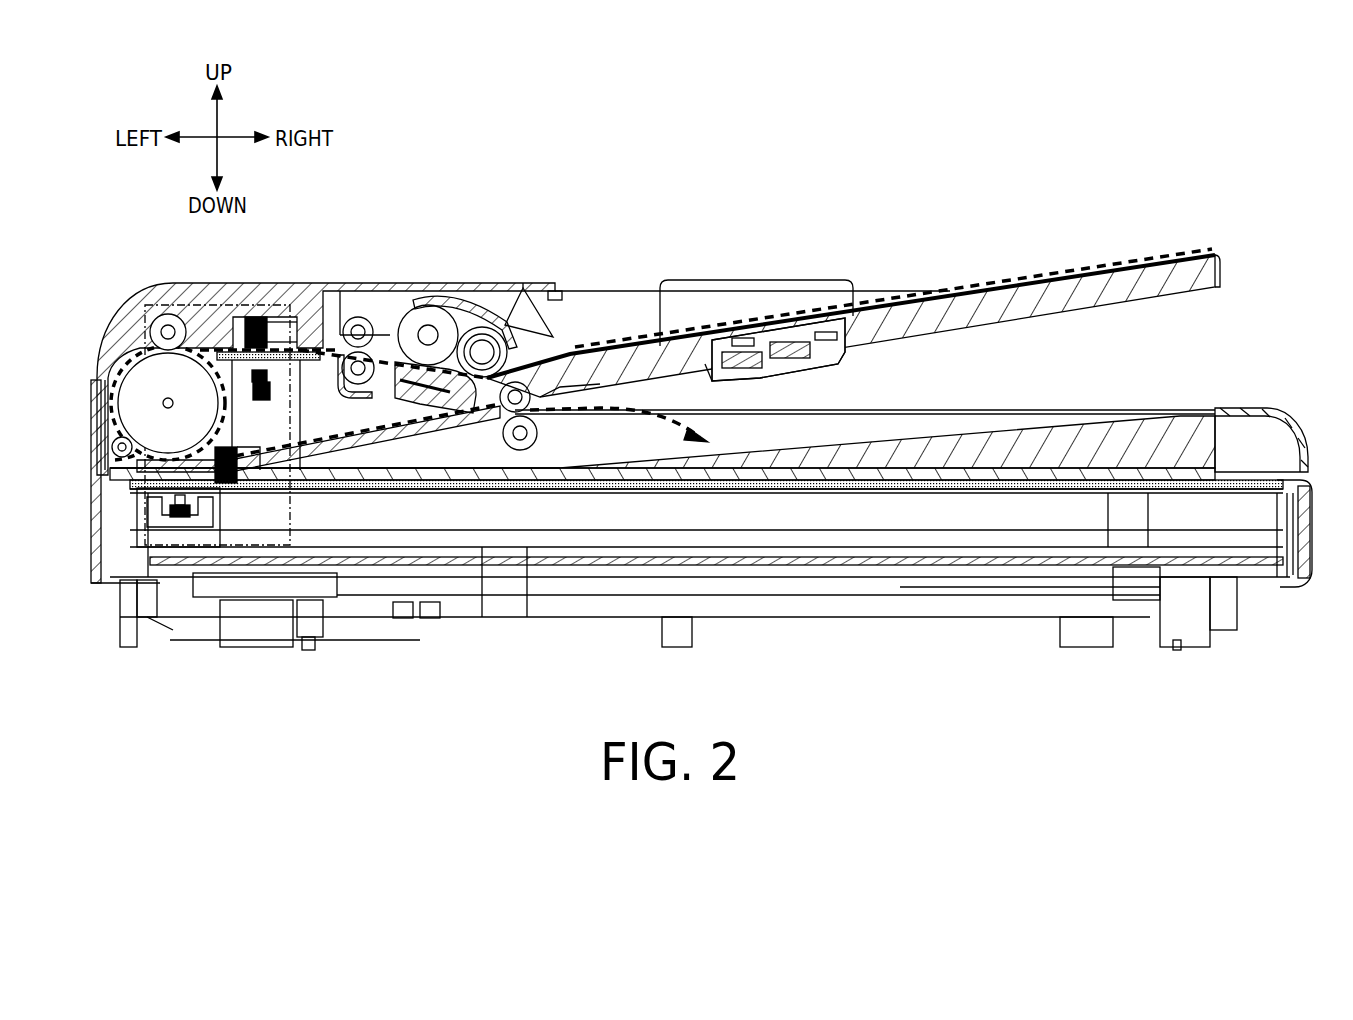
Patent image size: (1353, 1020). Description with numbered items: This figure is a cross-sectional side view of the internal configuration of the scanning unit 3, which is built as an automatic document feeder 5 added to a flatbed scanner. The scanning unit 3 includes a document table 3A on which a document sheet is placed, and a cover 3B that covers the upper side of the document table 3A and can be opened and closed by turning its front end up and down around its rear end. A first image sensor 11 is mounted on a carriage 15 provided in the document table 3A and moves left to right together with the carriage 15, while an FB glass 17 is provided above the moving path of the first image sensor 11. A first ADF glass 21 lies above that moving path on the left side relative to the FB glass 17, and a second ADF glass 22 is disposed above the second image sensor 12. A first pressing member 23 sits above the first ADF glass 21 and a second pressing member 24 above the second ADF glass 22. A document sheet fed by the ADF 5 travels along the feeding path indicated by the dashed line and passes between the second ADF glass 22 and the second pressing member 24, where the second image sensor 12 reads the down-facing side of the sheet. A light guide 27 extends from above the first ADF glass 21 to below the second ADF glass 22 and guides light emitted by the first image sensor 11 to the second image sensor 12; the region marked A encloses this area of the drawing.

The scanning unit 3 is at (892, 214).
The document table 3A is at (1312, 580).
The cover 3B is at (1311, 443).
The automatic document feeder 5 is at (387, 312).
The first image sensor 11 is at (213, 498).
The second image sensor 12 is at (287, 363).
The carriage 15 is at (213, 538).
The FB glass 17 is at (618, 492).
The first ADF glass 21 is at (236, 493).
The second ADF glass 22 is at (228, 347).
The first pressing member 23 is at (250, 456).
The second pressing member 24 is at (272, 336).
The light guide 27 is at (243, 432).
The region A is at (150, 302).